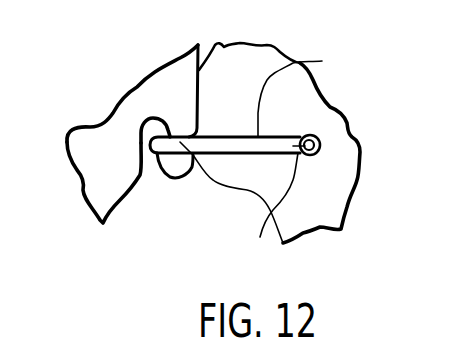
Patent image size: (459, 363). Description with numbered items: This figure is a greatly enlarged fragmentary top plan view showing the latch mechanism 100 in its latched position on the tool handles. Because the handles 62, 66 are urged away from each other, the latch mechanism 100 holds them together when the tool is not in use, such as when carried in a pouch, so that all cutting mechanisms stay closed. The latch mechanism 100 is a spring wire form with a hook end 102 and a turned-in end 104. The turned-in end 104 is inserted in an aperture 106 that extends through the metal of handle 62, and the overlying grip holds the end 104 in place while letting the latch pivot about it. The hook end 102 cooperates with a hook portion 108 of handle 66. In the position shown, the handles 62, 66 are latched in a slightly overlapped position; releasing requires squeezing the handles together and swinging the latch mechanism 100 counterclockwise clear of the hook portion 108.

The latch mechanism 100 is at (213, 92).
The handle 62 is at (323, 208).
The handle 66 is at (98, 191).
The hook end 102 is at (193, 156).
The turned-in end 104 is at (267, 210).
The aperture 106 is at (320, 145).
The hook portion 108 is at (170, 178).